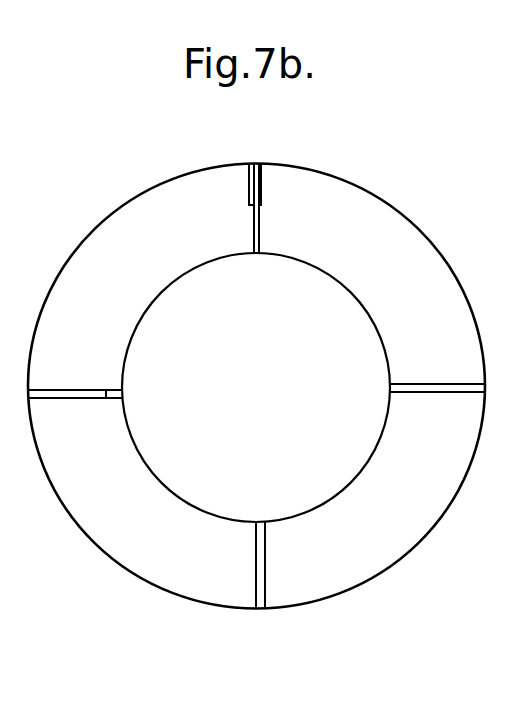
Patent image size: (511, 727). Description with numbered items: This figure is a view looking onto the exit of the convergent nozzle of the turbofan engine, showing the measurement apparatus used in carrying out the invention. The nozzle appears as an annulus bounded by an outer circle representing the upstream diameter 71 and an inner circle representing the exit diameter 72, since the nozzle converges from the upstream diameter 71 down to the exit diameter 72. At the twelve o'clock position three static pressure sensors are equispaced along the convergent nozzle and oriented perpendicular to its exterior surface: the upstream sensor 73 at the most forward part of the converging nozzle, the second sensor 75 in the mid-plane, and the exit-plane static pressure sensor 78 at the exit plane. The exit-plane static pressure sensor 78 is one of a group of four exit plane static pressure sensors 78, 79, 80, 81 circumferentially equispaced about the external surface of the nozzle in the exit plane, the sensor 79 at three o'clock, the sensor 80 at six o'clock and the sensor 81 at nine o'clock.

The upstream diameter 71 is at (422, 603).
The exit diameter 72 is at (160, 235).
The upstream sensor 73 is at (263, 172).
The second sensor 75 is at (259, 201).
The exit-plane static pressure sensor 78 is at (260, 251).
The exit plane static pressure sensor 79 is at (395, 384).
The exit plane static pressure sensor 80 is at (258, 528).
The exit plane static pressure sensor 81 is at (101, 398).